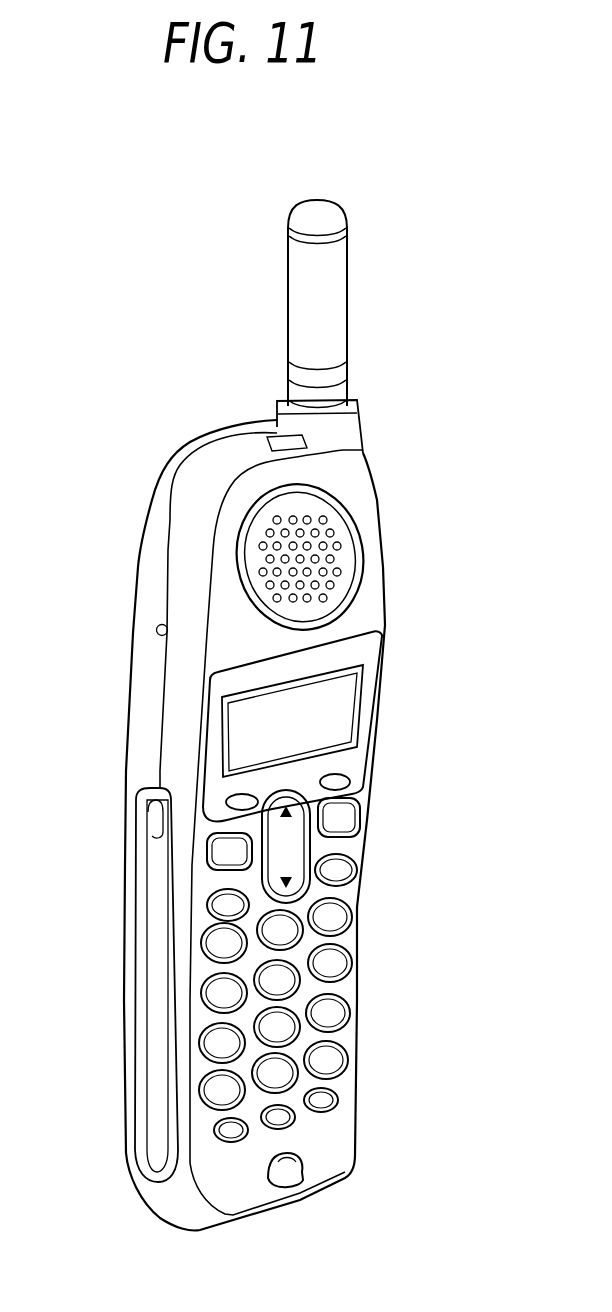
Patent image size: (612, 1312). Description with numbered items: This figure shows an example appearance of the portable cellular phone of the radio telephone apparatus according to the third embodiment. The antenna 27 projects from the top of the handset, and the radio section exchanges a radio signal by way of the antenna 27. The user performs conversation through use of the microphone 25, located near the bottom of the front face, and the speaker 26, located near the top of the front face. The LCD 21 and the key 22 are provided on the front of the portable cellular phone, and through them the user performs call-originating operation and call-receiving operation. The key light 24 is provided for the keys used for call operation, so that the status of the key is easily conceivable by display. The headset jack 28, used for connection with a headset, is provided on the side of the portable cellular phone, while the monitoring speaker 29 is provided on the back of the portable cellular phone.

The LCD 21 is at (365, 686).
The key 22 is at (375, 857).
The key light 24 is at (250, 850).
The microphone 25 is at (302, 1163).
The speaker 26 is at (337, 528).
The antenna 27 is at (347, 233).
The headset jack 28 is at (136, 811).
The monitoring speaker 29 is at (160, 472).